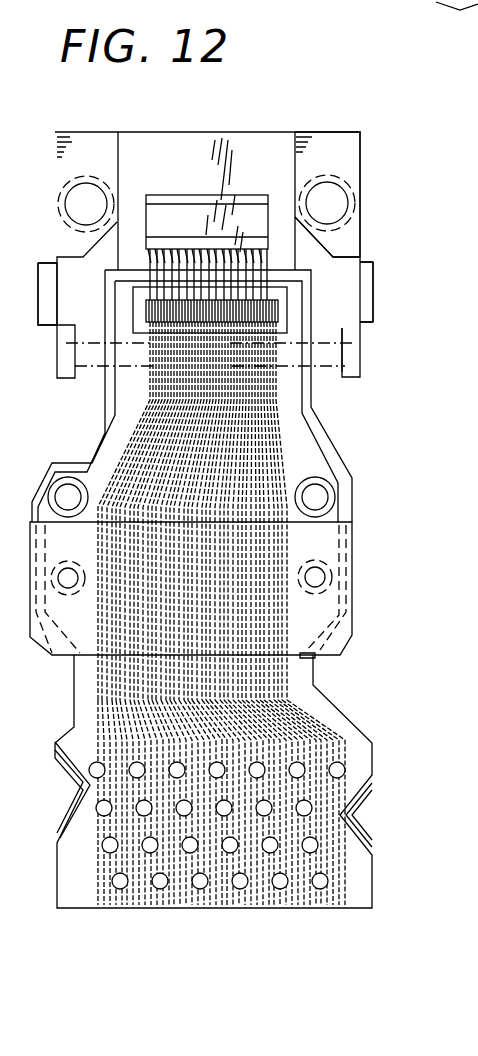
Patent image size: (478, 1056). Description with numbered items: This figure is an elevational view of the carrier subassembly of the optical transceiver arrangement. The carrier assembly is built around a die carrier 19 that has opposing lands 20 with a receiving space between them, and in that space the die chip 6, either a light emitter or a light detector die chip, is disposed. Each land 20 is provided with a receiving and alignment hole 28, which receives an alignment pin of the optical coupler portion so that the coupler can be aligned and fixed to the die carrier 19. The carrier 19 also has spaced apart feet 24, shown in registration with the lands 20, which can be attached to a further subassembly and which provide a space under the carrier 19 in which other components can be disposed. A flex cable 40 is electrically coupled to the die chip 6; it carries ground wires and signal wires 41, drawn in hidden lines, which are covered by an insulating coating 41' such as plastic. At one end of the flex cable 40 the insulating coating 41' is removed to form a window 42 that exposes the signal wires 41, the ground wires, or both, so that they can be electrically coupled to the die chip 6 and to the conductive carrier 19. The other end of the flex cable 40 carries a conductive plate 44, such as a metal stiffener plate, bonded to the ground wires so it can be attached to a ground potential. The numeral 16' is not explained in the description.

The die chip 6 is at (243, 220).
The flexible circuit 16' is at (424, 21).
The die carrier 19 is at (167, 140).
The opposing lands 20 is at (347, 147).
The feet 24 is at (363, 367).
The receiving and alignment hole 28 is at (337, 200).
The flex cable 40 is at (362, 543).
The signal wires 41 is at (264, 511).
The insulating coating 41' is at (260, 781).
The window 42 is at (277, 312).
The conductive plate 44 is at (343, 630).